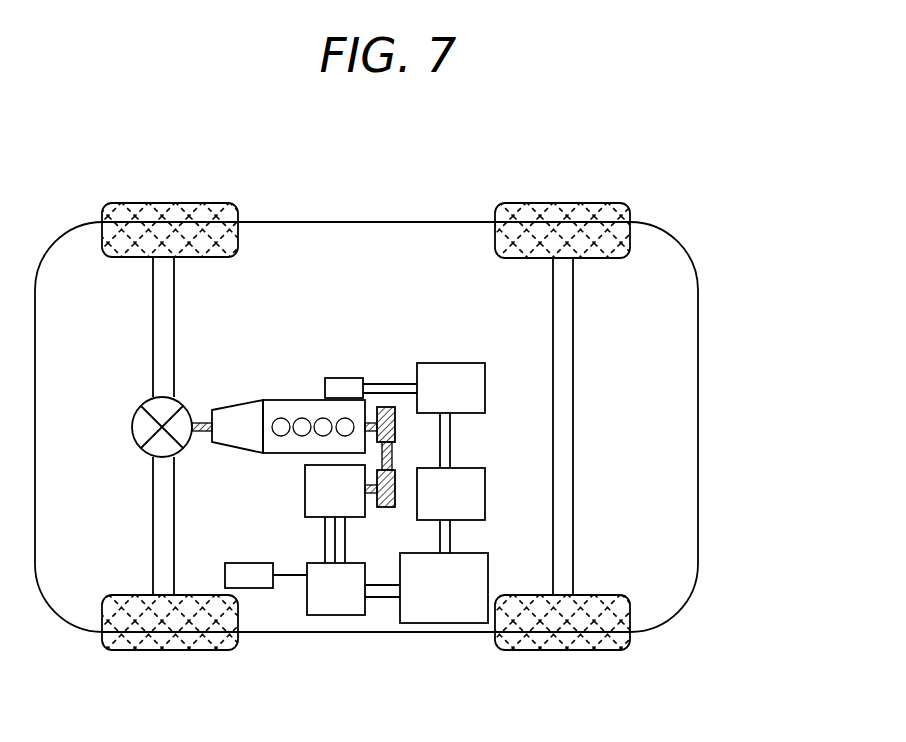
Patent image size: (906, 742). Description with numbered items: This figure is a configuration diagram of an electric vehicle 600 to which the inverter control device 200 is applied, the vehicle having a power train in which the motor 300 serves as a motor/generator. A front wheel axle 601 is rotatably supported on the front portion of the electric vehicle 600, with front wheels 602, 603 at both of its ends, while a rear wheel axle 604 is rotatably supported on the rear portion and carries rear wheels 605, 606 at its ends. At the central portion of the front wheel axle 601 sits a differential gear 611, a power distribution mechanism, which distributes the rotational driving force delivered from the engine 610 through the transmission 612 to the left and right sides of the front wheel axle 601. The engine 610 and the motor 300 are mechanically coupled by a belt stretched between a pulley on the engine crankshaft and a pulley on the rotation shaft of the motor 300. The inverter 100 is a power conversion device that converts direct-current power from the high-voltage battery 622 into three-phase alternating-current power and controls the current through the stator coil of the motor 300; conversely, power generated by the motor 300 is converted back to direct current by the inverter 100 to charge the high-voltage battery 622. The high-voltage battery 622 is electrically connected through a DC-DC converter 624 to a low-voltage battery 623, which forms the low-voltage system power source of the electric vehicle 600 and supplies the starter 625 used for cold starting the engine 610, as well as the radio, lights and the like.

The inverter 100 is at (337, 615).
The inverter control device 200 is at (252, 563).
The motor 300 is at (305, 483).
The electric vehicle 600 is at (698, 343).
The front wheel axle 601 is at (153, 333).
The front wheel 602 is at (170, 203).
The front wheel 603 is at (170, 650).
The rear wheel axle 604 is at (573, 425).
The rear wheel 605 is at (560, 203).
The rear wheel 606 is at (563, 650).
The engine 610 is at (293, 399).
The differential gear 611 is at (132, 427).
The transmission 612 is at (228, 405).
The high-voltage battery 622 is at (455, 623).
The low-voltage battery 623 is at (450, 363).
The DC-DC converter 624 is at (485, 493).
The starter 625 is at (341, 378).